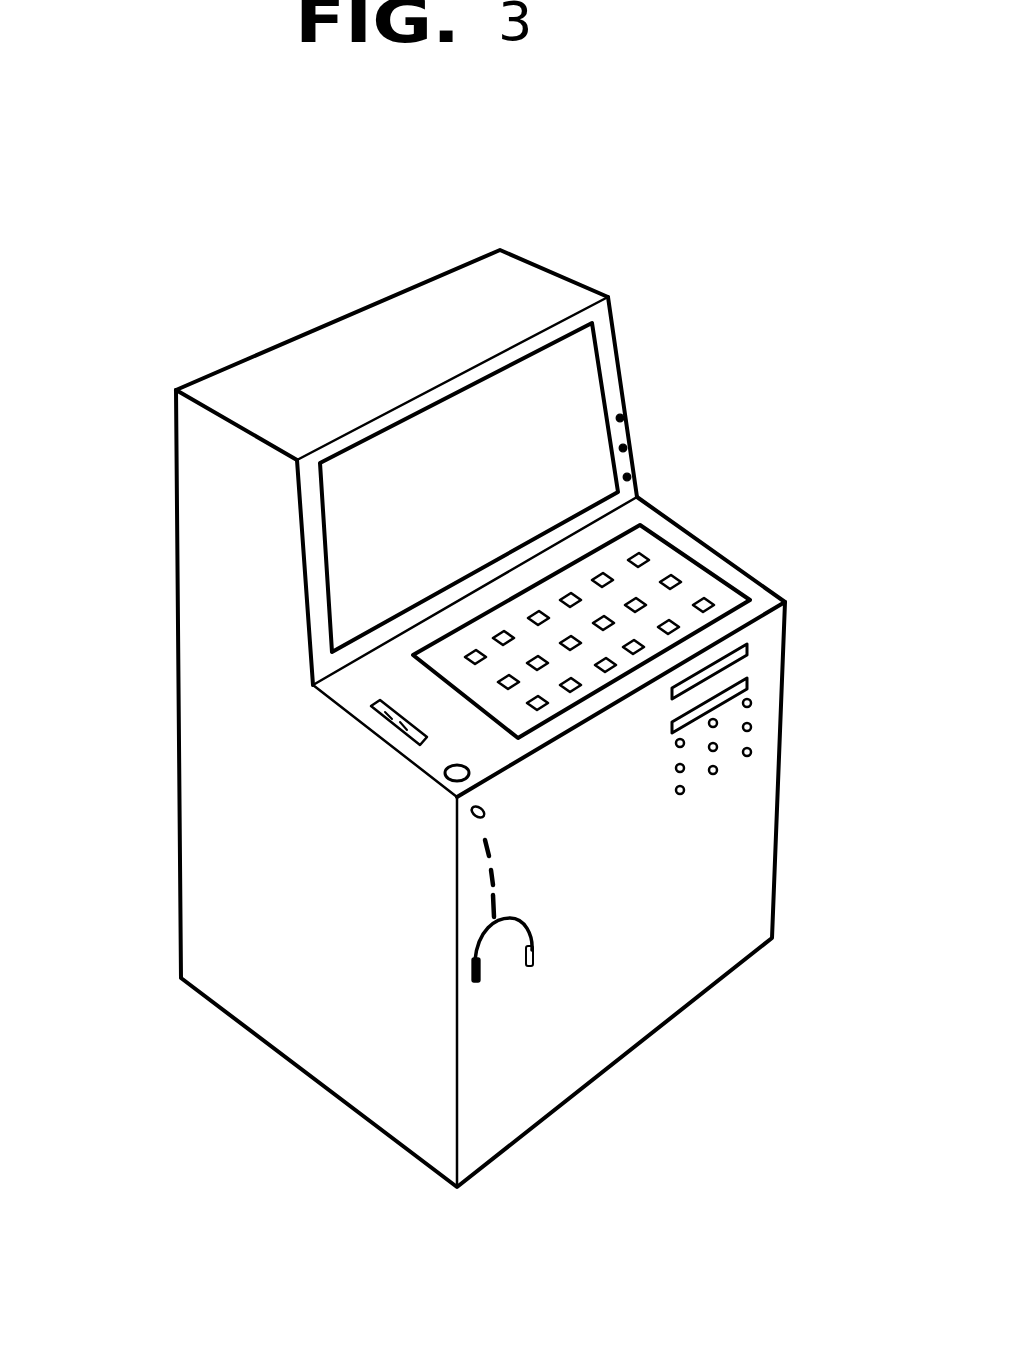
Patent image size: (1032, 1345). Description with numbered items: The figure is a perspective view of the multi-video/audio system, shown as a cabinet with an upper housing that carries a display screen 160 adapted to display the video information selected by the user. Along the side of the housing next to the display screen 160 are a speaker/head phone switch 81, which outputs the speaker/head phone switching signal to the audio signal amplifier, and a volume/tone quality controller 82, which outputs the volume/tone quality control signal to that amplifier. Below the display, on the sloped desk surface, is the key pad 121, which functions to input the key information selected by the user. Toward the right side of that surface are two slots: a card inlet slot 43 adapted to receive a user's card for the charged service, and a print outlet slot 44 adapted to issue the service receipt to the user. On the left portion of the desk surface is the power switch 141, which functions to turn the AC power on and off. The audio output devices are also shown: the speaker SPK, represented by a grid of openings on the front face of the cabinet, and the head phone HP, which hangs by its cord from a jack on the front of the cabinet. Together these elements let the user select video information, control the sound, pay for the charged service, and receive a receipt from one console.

The display screen 160 is at (580, 340).
The speaker/head phone switch 81 is at (623, 413).
The volume/tone quality controller 82 is at (632, 476).
The key pad 121 is at (705, 587).
The card inlet slot 43 is at (747, 652).
The print outlet slot 44 is at (747, 688).
The power switch 141 is at (372, 712).
The speaker SPK is at (717, 775).
The head phone HP is at (485, 987).